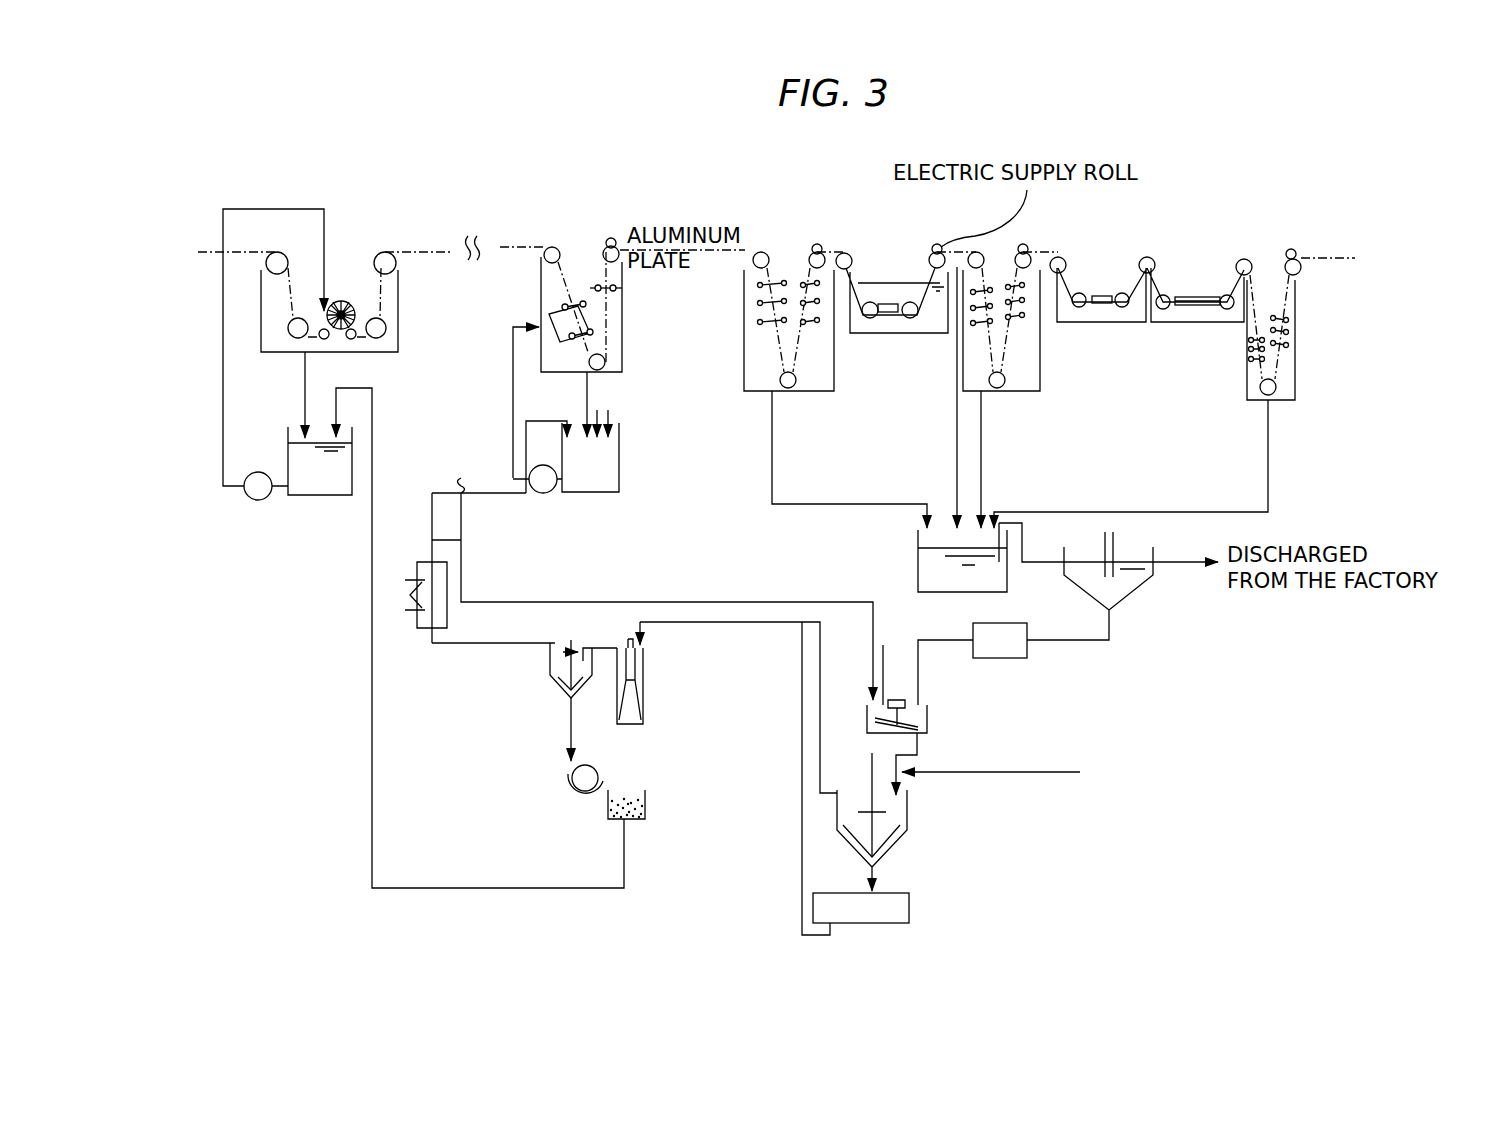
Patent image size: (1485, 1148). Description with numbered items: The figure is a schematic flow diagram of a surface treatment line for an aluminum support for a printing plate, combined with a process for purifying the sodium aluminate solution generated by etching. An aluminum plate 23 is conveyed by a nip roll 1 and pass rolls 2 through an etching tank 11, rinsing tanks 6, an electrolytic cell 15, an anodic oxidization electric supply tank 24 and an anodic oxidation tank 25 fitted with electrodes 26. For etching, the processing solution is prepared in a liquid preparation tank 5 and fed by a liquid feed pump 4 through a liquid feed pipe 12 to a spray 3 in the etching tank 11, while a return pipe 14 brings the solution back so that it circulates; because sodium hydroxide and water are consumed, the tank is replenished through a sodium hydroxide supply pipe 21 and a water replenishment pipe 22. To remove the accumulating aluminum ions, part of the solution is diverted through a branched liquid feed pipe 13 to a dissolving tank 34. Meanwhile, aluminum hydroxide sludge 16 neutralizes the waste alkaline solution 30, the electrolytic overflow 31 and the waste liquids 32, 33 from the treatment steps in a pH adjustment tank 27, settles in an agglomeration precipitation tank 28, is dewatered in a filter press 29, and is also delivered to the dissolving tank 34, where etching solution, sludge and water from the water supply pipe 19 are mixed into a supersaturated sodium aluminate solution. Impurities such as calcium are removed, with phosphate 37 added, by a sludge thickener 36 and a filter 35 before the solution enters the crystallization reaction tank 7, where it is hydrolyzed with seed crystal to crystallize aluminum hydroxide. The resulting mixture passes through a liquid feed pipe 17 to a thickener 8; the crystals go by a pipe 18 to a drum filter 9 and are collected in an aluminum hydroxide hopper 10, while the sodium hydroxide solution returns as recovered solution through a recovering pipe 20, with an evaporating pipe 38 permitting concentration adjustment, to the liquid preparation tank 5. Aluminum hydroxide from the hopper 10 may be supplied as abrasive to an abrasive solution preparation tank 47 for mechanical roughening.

The nip roll 1 is at (613, 238).
The pass roll 2 is at (675, 418).
The spray 3 is at (592, 333).
The liquid feed pump 4 is at (543, 493).
The liquid preparation tank 5 is at (620, 465).
The rinsing tank 6 is at (1264, 430).
The crystallization reaction tank 7 is at (643, 716).
The thickener 8 is at (562, 697).
The drum filter 9 is at (570, 793).
The aluminum hydroxide hopper 10 is at (635, 821).
The etching tank 11 is at (624, 326).
The etching solution recycling pipe 12 is at (527, 402).
The etching solution recycling pipe 13 is at (667, 596).
The return pipe 14 is at (572, 404).
The electrolytic cell 15 is at (870, 333).
The aluminum hydroxide sludge 16 is at (945, 660).
The liquid feed pipe 17 is at (590, 653).
The pipe 18 is at (587, 729).
The water supply pipe to dissolving tank 19 is at (885, 663).
The recovering pipe 20 is at (520, 648).
The sodium hydroxide supply pipe 21 is at (599, 411).
The water replenishment pipe 22 is at (623, 411).
The aluminum plate 23 is at (758, 252).
The anodic oxidization electric supply tank 24 is at (1108, 322).
The anodic oxidation tank 25 is at (888, 304).
The electrode 26 is at (1103, 298).
The pH adjustment tank 27 is at (916, 566).
The agglomeration precipitation tank 28 is at (1125, 600).
The filter press 29 is at (1010, 658).
The wash water/waste alkaline solution 30 is at (849, 459).
The overflow pipe for electrolytic solution 31 is at (943, 397).
The wash water/waste liquid 32 is at (969, 459).
The wash water/waste liquid 33 is at (1131, 464).
The dissolving tank 34 is at (927, 715).
The filter 35 is at (909, 900).
The sludge thickener 36 is at (907, 826).
The phosphate 37 is at (1045, 773).
The evaporating pipe 38 is at (418, 634).
The abrasive solution preparation tank 47 is at (318, 495).